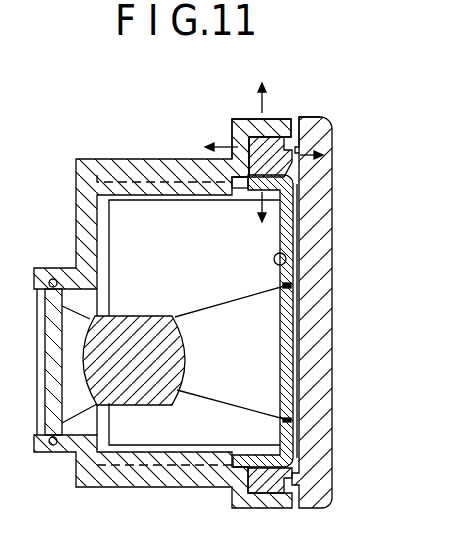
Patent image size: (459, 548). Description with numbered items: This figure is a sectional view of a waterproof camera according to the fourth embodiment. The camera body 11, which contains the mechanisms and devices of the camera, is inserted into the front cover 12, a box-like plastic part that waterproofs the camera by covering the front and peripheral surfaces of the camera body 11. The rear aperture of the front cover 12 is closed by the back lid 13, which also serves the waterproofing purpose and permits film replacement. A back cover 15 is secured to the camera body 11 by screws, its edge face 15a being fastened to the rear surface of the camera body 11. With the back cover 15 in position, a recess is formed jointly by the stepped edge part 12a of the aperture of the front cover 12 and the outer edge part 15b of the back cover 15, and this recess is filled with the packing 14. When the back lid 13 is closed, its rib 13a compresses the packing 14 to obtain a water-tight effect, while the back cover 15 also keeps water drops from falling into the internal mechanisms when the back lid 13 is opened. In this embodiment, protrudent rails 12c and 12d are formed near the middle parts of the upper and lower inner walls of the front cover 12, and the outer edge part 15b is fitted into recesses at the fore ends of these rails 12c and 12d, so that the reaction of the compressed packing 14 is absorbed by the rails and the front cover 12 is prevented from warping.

The camera body 11 is at (126, 203).
The front cover 12 is at (93, 147).
The edge part of the aperture of the front cover 12a is at (270, 140).
The protrudent rail 12c is at (148, 190).
The protrudent rail 12d is at (134, 457).
The back lid 13 is at (346, 257).
The rib 13a is at (303, 125).
The packing 14 is at (290, 150).
The back cover 15 is at (285, 222).
The edge face of the back cover 15a is at (278, 262).
The outer edge part of the back cover 15b is at (233, 177).